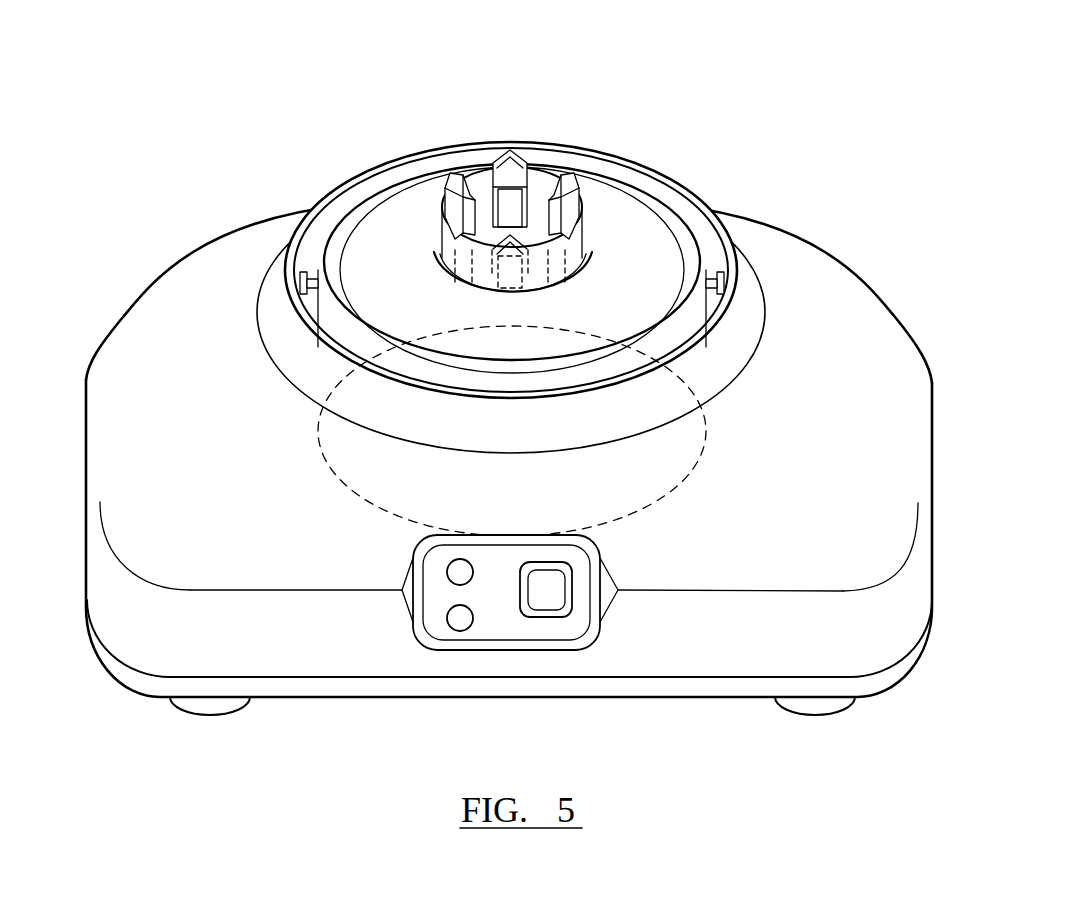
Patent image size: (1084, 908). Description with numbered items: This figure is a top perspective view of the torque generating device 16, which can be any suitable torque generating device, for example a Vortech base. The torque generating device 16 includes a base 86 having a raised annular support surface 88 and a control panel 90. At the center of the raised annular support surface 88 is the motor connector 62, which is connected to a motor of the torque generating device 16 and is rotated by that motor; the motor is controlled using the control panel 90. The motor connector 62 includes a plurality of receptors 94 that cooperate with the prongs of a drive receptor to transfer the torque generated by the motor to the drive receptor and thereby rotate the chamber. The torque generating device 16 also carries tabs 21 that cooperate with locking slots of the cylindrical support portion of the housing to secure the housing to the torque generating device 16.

The torque generating device 16 is at (499, 388).
The tabs 21 is at (305, 270).
The motor connector 62 is at (495, 133).
The base 86 is at (210, 512).
The raised annular support surface 88 is at (268, 292).
The control panel 90 is at (437, 600).
The receptors 94 is at (573, 197).